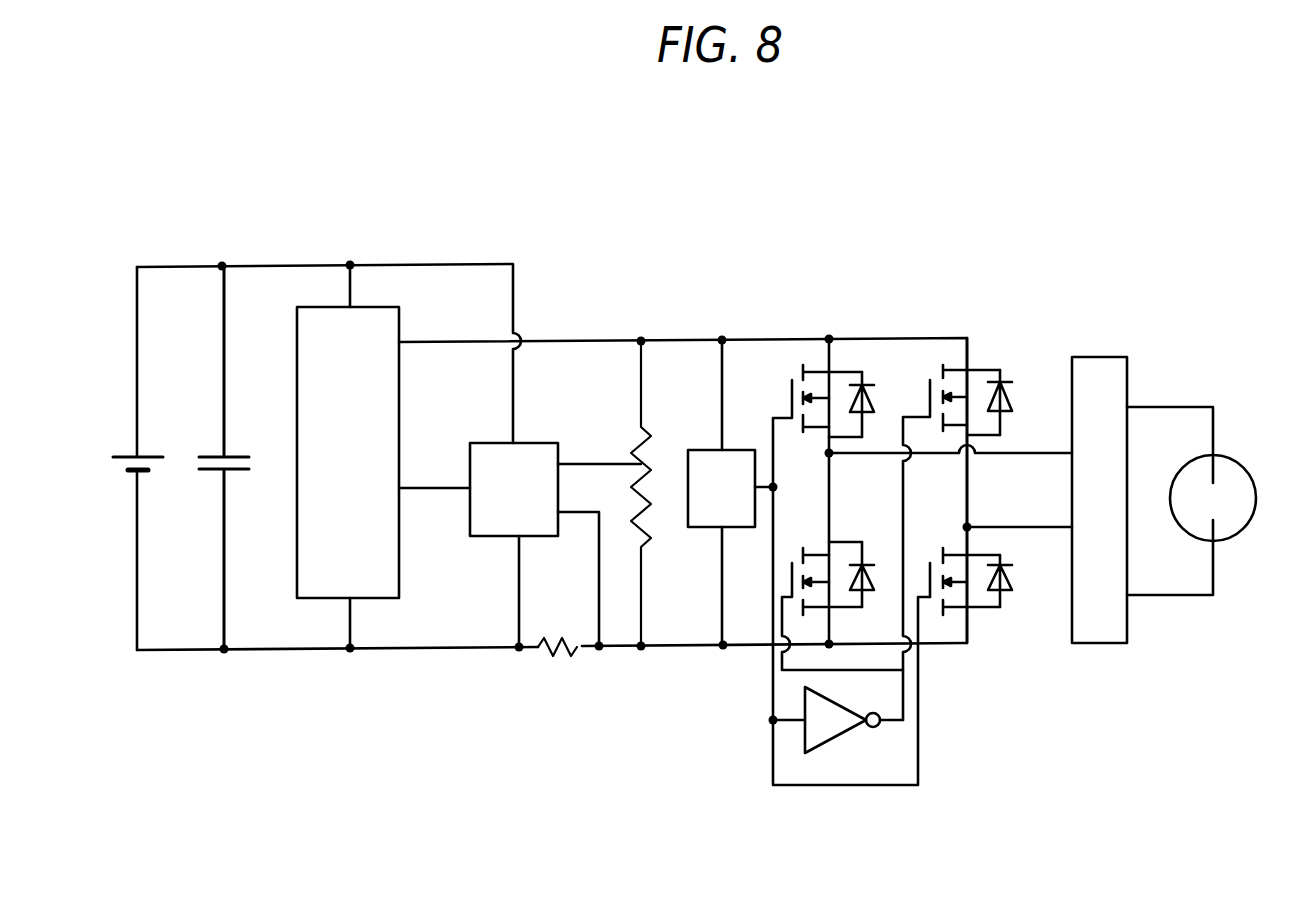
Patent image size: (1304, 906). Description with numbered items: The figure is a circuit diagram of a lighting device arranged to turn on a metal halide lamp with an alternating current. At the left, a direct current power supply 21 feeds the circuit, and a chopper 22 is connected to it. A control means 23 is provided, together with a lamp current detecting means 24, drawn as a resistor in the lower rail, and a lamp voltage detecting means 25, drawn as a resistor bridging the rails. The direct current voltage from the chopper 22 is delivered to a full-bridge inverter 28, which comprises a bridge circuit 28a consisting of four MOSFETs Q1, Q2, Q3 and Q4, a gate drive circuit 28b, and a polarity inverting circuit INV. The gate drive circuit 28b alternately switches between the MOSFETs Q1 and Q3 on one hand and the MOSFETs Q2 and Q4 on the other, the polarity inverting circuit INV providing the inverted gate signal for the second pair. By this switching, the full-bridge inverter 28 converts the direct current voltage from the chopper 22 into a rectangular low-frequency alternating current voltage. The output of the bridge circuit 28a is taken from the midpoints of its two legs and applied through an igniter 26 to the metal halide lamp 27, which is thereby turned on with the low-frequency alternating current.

The direct current power supply 21 is at (127, 455).
The chopper 22 is at (304, 450).
The control means 23 is at (496, 443).
The lamp current detecting means 24 is at (552, 658).
The lamp voltage detecting means 25 is at (638, 428).
The igniter 26 is at (1078, 357).
The metal halide lamp 27 is at (1237, 462).
The full-bridge inverter 28 is at (916, 519).
The bridge circuit 28a is at (812, 478).
The gate drive circuit 28b is at (707, 450).
The MOSFET Q1 is at (797, 384).
The MOSFET Q2 is at (931, 384).
The MOSFET Q3 is at (940, 580).
The MOSFET Q4 is at (806, 560).
The polarity inverting circuit INV is at (828, 728).